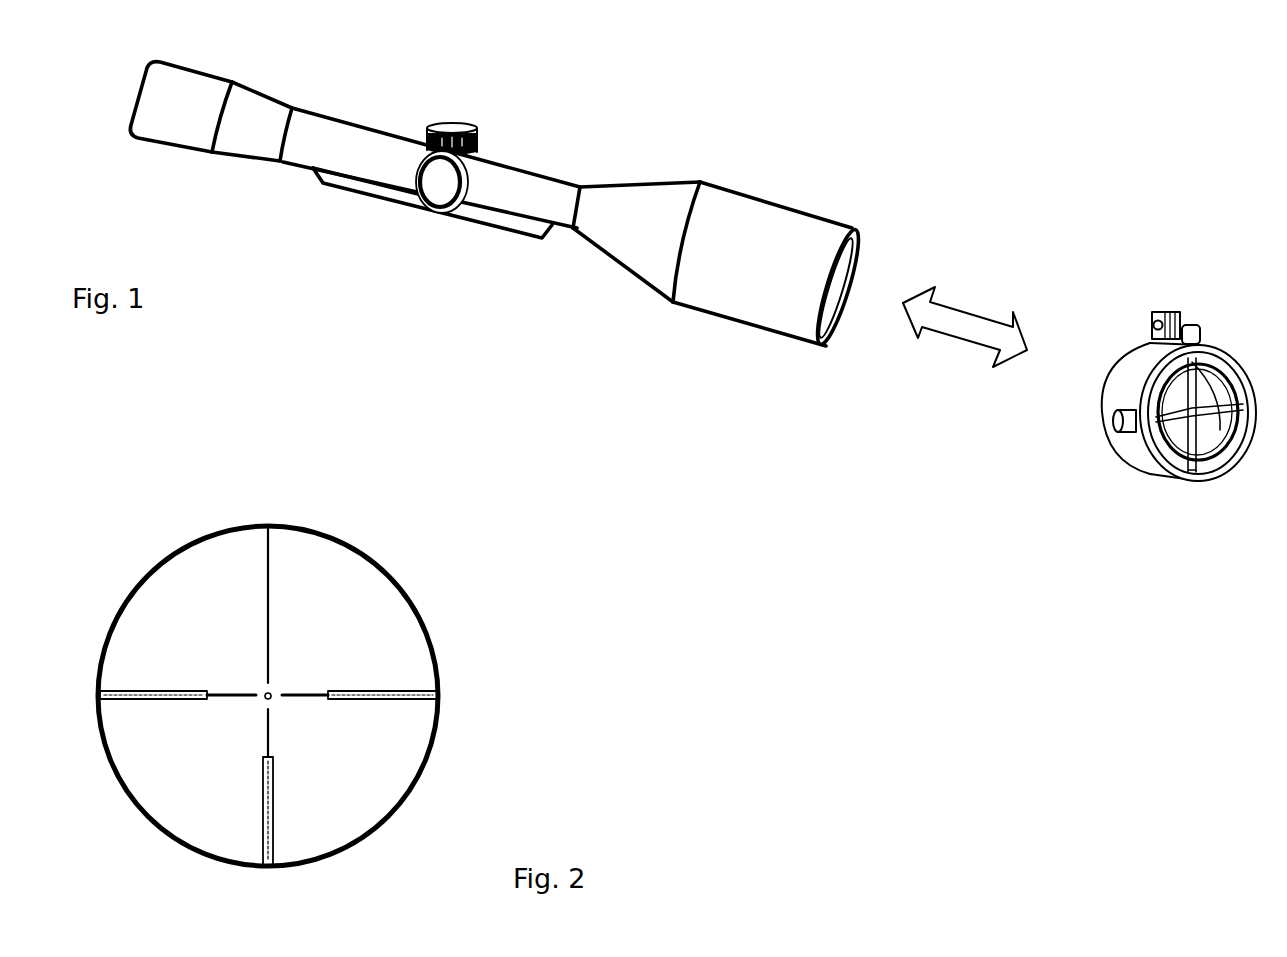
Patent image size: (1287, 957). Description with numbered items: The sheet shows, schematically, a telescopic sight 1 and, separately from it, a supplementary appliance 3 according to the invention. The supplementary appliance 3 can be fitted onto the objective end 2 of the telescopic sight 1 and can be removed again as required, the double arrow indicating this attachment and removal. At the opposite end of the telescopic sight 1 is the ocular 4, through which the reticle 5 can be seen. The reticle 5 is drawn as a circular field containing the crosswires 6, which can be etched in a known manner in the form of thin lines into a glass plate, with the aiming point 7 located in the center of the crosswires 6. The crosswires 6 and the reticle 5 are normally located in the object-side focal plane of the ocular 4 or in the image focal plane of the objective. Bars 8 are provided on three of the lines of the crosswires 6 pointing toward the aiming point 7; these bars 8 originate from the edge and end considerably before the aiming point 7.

In FIG. 1, the telescopic sight 1 is at (430, 232).
In FIG. 1, the objective end 2 is at (757, 215).
In FIG. 1, the supplementary appliance 3 is at (1088, 457).
In FIG. 1, the ocular 4 is at (158, 118).
In FIG. 2, the reticle 5 is at (452, 575).
In FIG. 2, the crosswires 6 is at (272, 573).
In FIG. 2, the aiming point 7 is at (263, 687).
In FIG. 2, the bars 8 is at (150, 690).